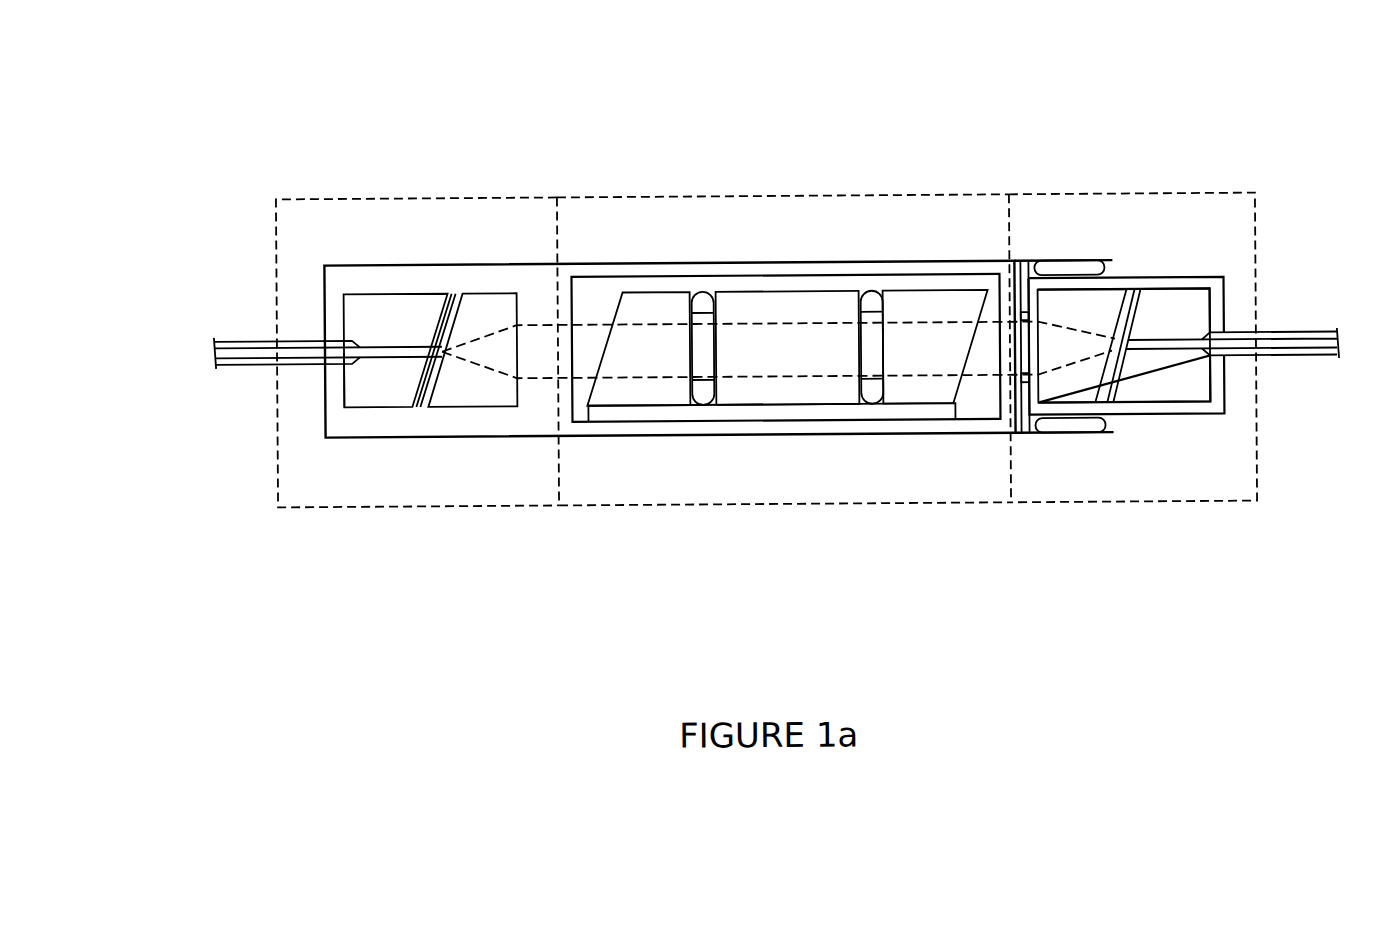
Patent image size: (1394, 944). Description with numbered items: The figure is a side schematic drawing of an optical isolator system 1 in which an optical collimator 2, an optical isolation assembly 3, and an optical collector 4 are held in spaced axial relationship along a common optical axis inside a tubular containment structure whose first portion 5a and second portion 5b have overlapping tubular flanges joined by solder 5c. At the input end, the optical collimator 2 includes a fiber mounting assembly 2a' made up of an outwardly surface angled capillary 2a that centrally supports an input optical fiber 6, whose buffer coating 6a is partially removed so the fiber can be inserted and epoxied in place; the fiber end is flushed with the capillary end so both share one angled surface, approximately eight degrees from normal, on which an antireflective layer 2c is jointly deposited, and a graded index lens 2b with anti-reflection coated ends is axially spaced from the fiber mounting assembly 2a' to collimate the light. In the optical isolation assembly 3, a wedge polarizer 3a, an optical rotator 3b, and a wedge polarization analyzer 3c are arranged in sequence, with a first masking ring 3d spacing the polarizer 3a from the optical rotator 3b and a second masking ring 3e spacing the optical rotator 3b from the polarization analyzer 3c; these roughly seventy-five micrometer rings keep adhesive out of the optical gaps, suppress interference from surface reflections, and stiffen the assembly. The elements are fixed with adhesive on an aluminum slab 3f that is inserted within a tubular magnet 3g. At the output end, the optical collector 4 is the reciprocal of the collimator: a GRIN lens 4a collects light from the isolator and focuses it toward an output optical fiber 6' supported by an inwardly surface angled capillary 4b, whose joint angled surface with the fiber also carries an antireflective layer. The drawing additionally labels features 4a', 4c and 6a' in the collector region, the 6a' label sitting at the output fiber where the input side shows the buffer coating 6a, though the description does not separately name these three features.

The optical isolator system 1 is at (252, 113).
The optical collimator 2 is at (415, 196).
The optical isolation assembly 3 is at (853, 195).
The optical collector 4 is at (1135, 195).
The outwardly surface angled capillary 2a is at (395, 322).
The fiber mounting assembly 2a' is at (352, 419).
The graded index lens 2b is at (472, 406).
The antireflective layer 2c is at (452, 291).
The polarizer 3a is at (645, 291).
The optical rotator 3b is at (787, 292).
The polarization analyzer 3c is at (935, 292).
The first masking ring 3d is at (702, 292).
The second masking ring 3e is at (868, 292).
The slab 3f is at (822, 411).
The tubular magnet 3g is at (732, 421).
The GRIN lens 4a is at (1076, 323).
The end plate 4a' is at (1045, 297).
The inwardly surface angled capillary 4b is at (1185, 291).
The output inclined plate 4c is at (1137, 291).
The first portion of containment structure 5a is at (473, 435).
The second portion of containment structure 5b is at (1187, 418).
The solder 5c is at (1075, 435).
The input optical fiber 6 is at (328, 290).
The output optical fiber 6' is at (1240, 324).
The buffer coating 6a is at (286, 322).
The output fiber ferrule 6a' is at (1269, 314).